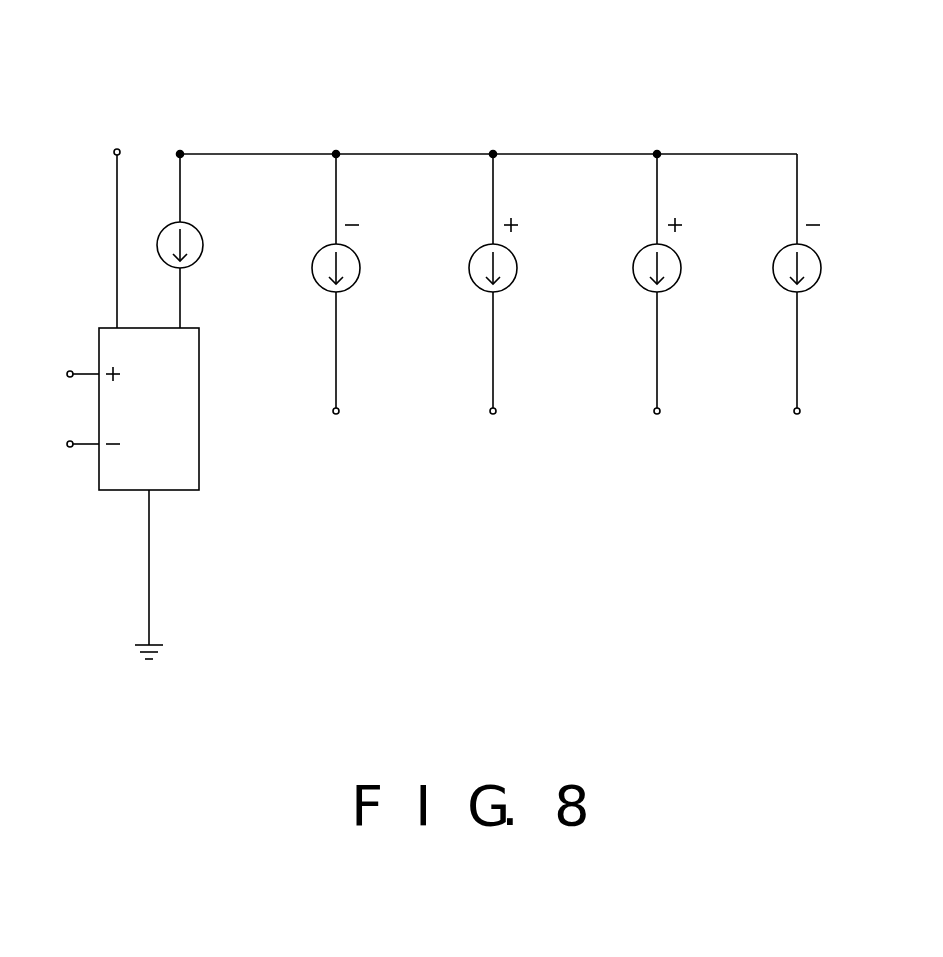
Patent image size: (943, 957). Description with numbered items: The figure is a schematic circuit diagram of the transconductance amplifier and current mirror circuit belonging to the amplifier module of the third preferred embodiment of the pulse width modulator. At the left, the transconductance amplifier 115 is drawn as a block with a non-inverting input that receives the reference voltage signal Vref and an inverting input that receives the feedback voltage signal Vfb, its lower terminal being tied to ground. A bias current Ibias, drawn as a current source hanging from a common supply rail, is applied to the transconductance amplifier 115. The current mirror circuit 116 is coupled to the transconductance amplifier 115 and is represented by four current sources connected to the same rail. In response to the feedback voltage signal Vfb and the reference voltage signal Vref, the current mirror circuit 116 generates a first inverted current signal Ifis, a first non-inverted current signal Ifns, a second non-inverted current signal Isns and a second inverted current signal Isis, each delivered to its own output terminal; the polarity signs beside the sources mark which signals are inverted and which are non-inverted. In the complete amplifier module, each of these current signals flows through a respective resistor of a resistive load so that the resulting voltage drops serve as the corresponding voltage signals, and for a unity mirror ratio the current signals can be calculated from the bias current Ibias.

The transconductance amplifier 115 is at (154, 493).
The current mirror circuit 116 is at (517, 238).
The bias current Ibias is at (212, 240).
The first inverted current signal Ifis is at (349, 296).
The first non-inverted current signal Ifns is at (509, 296).
The second non-inverted current signal Isns is at (675, 296).
The second inverted current signal Isis is at (813, 297).
The reference voltage signal Vref is at (66, 372).
The feedback voltage signal Vfb is at (72, 442).